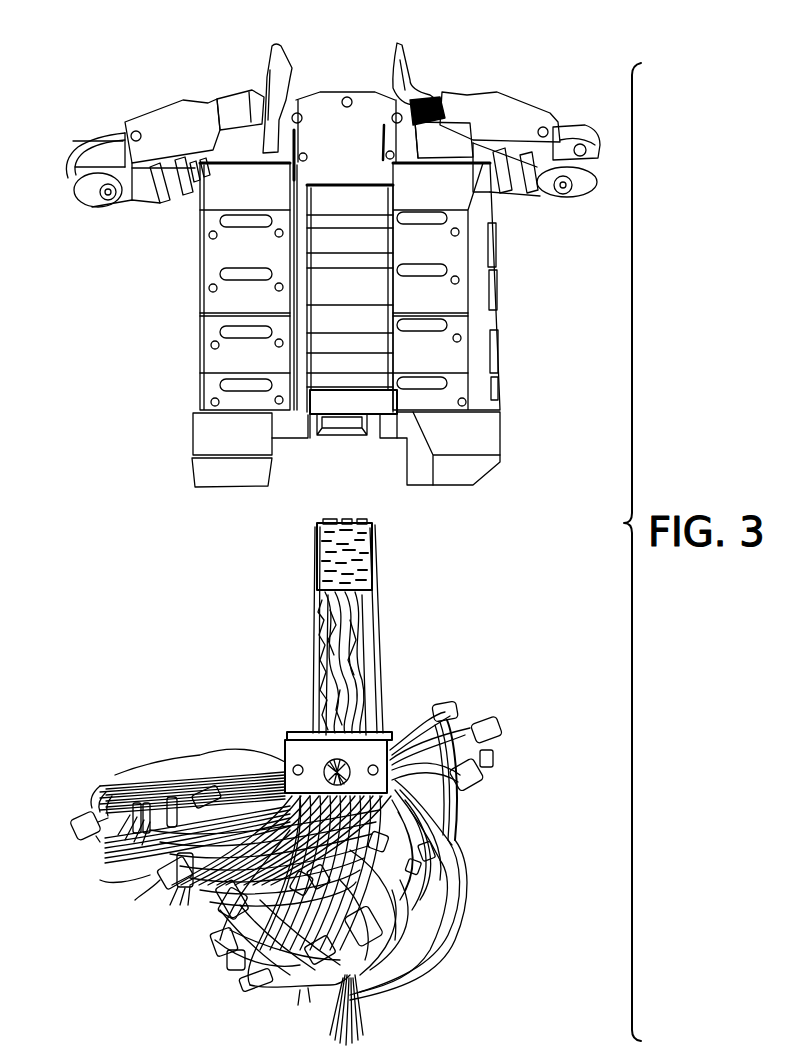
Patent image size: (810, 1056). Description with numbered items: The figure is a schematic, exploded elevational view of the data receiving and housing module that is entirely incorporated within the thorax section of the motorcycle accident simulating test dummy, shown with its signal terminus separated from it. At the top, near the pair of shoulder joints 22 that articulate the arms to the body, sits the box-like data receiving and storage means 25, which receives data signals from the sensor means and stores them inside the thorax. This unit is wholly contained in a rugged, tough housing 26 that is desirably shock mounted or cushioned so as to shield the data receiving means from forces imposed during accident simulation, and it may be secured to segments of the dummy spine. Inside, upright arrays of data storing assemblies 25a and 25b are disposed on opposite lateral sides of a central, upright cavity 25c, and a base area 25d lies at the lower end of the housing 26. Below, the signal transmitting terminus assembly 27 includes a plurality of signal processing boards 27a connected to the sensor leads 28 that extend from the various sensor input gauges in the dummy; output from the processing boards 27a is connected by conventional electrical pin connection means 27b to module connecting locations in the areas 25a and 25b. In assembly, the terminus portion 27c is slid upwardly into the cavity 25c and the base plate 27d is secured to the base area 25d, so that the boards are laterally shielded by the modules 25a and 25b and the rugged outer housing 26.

The shoulder joints 22 is at (572, 122).
The data receiving and storage means 25 is at (513, 250).
The data storing assembly 25a is at (203, 377).
The data storing assembly 25b is at (497, 350).
The central upright cavity 25c is at (320, 445).
The base area 25d is at (347, 440).
The housing 26 is at (497, 295).
The signal transmitting terminus assembly 27 is at (385, 570).
The signal processing boards 27a is at (380, 680).
The electrical pin connection means 27b is at (78, 840).
The terminus portion 27c is at (370, 595).
The base plate 27d is at (282, 762).
The sensor leads 28 is at (358, 1030).